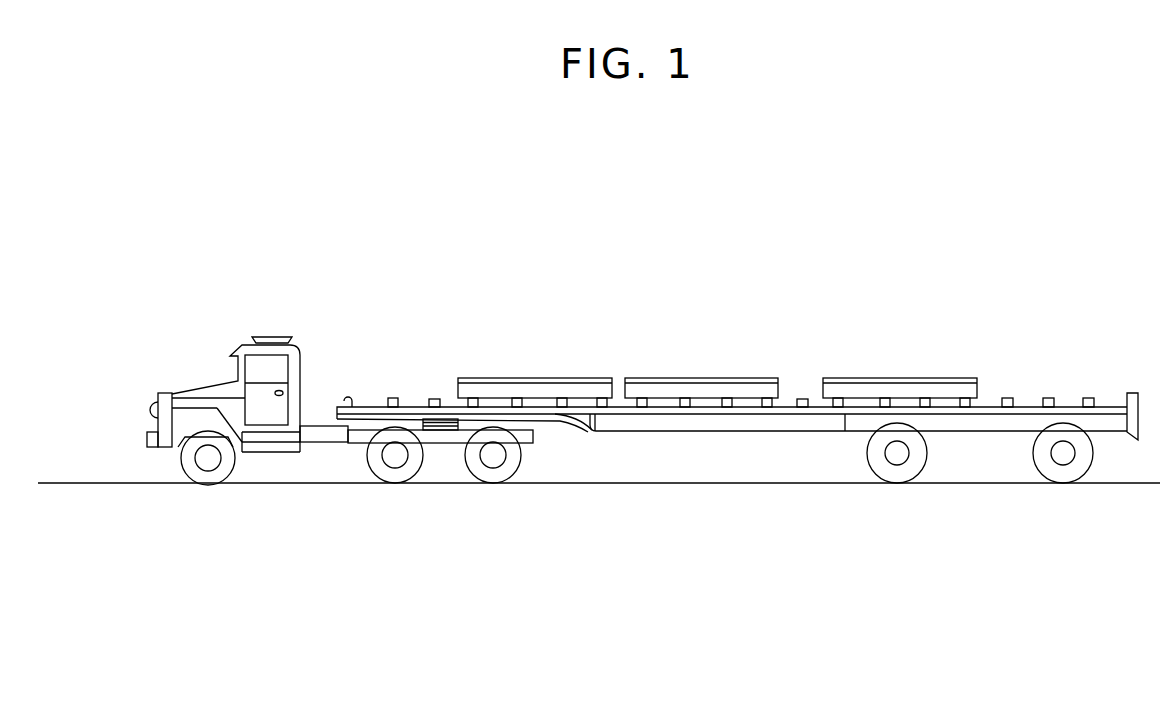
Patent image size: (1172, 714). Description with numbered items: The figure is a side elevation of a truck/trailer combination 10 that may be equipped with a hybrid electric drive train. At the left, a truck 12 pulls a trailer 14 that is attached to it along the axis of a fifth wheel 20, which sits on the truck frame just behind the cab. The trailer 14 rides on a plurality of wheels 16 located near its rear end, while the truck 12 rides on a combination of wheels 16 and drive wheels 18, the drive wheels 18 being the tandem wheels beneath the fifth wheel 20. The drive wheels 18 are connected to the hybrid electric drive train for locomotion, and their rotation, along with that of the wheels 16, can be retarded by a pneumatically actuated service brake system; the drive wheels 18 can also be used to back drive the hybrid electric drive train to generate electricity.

The truck/trailer combination 10 is at (242, 163).
The truck 12 is at (213, 364).
The trailer 14 is at (717, 420).
The wheels 16 is at (1043, 457).
The drive wheels 18 is at (388, 477).
The fifth wheel 20 is at (437, 428).